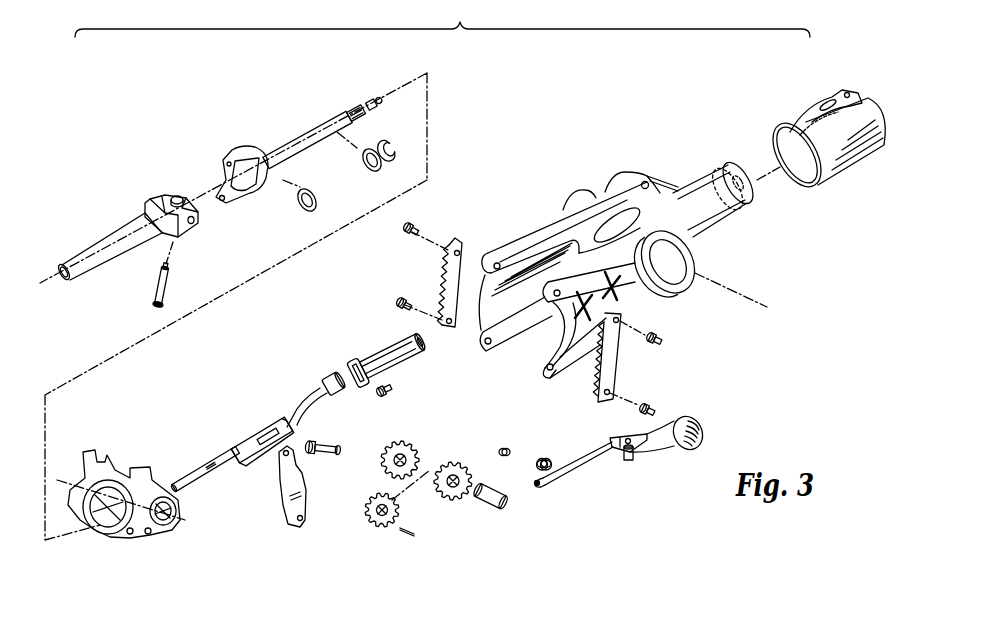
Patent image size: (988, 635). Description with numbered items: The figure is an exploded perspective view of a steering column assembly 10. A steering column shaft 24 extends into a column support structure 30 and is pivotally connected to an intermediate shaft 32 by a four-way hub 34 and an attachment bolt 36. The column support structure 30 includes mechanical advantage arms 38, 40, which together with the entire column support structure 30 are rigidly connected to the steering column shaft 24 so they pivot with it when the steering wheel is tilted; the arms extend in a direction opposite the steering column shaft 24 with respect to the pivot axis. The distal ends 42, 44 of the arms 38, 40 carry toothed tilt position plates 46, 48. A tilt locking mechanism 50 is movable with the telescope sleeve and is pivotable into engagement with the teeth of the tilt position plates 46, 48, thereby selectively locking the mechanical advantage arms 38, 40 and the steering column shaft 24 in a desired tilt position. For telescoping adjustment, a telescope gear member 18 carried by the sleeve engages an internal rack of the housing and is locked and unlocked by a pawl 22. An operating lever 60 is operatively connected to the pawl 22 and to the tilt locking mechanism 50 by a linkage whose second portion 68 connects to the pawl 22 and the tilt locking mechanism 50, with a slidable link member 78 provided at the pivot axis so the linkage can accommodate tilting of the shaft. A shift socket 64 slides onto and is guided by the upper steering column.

The steering column assembly 10 is at (442, 21).
The telescope gear member 18 is at (446, 522).
The pawl 22 is at (275, 505).
The steering column shaft 24 is at (302, 143).
The column support structure 30 is at (690, 289).
The intermediate shaft 32 is at (90, 260).
The four-way hub 34 is at (181, 195).
The attachment bolt 36 is at (174, 286).
The mechanical advantage arm 38 is at (543, 228).
The mechanical advantage arm 40 is at (556, 368).
The distal end 42 is at (478, 348).
The distal end 44 is at (542, 370).
The tilt position plate 46 is at (430, 277).
The tilt position plate 48 is at (628, 360).
The tilt locking mechanism 50 is at (166, 541).
The operating lever 60 is at (683, 458).
The shift socket 64 is at (786, 120).
The second portion 68 is at (317, 392).
The slidable link member 78 is at (373, 343).